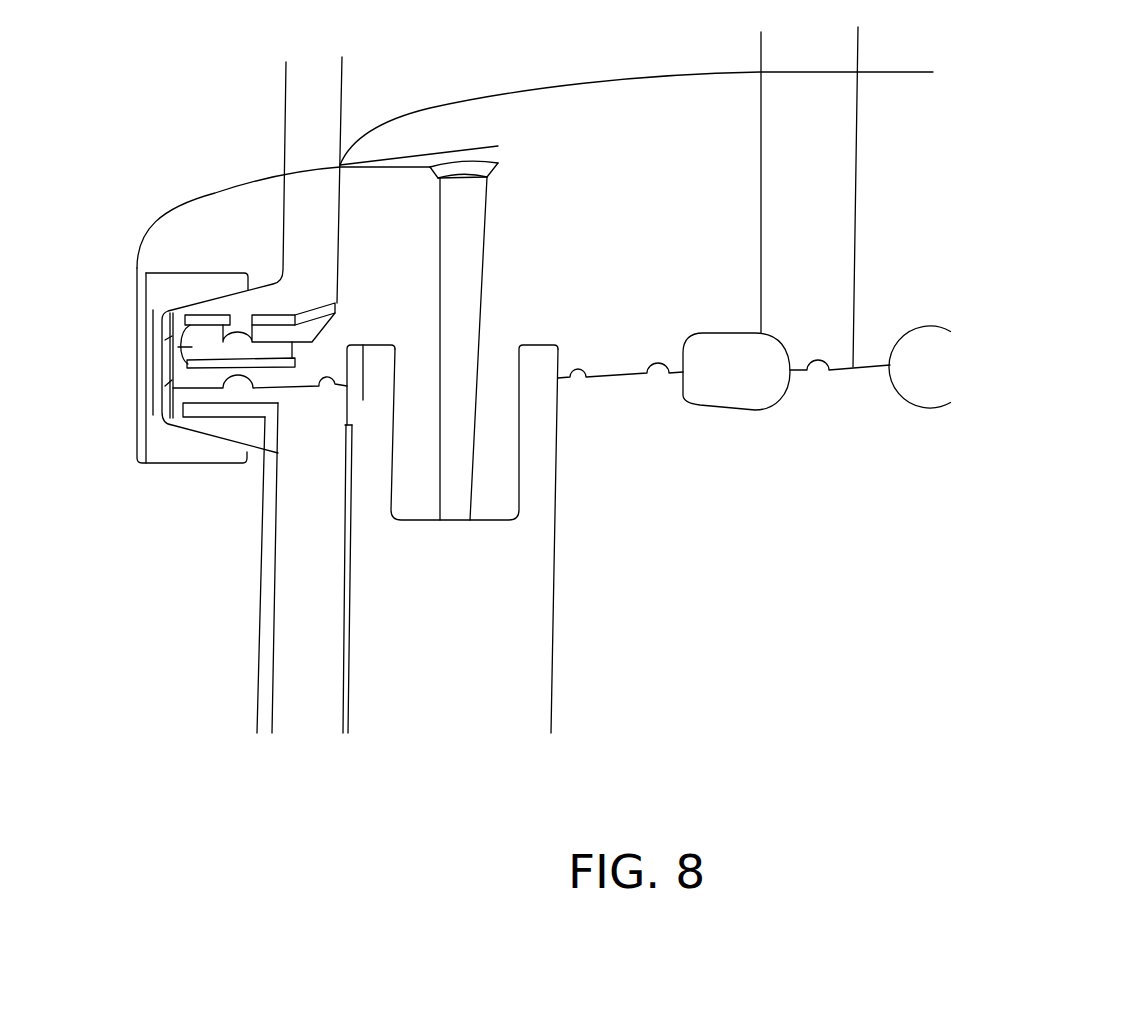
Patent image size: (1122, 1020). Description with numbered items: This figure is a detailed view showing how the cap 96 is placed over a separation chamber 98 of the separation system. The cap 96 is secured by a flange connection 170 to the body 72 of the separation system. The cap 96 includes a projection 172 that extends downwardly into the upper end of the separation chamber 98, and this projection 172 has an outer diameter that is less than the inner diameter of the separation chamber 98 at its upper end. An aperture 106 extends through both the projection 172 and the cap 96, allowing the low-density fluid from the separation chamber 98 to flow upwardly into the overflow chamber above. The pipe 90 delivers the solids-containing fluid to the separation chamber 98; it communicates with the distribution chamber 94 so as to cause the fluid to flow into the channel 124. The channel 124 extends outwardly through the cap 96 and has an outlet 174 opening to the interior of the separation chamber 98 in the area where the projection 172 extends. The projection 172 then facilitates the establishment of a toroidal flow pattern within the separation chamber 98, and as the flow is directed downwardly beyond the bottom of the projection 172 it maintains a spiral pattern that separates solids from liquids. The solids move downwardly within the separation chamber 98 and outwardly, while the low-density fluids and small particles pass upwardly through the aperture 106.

The body 72 is at (262, 595).
The pipe 90 is at (840, 126).
The distribution chamber 94 is at (813, 367).
The cap 96 is at (540, 116).
The separation chamber 98 is at (543, 482).
The aperture 106 is at (468, 265).
The channel 124 is at (745, 392).
The flange connection 170 is at (140, 357).
The projection 172 is at (492, 507).
The outlet 174 is at (357, 405).